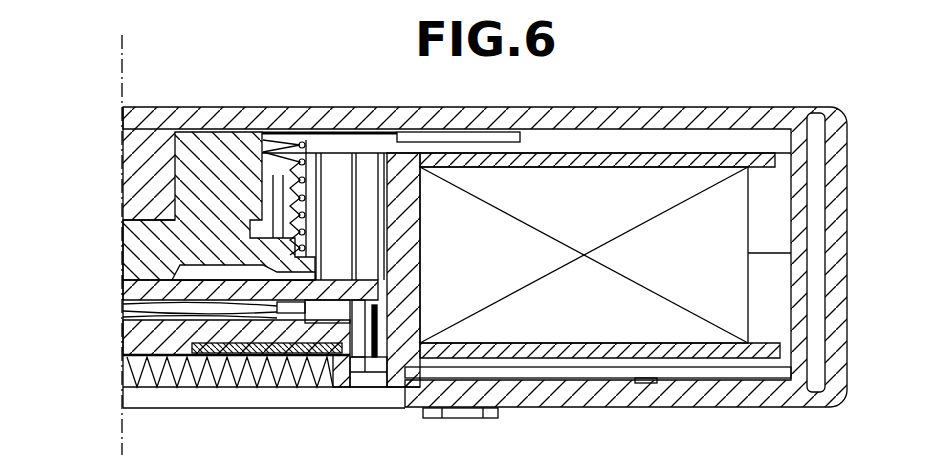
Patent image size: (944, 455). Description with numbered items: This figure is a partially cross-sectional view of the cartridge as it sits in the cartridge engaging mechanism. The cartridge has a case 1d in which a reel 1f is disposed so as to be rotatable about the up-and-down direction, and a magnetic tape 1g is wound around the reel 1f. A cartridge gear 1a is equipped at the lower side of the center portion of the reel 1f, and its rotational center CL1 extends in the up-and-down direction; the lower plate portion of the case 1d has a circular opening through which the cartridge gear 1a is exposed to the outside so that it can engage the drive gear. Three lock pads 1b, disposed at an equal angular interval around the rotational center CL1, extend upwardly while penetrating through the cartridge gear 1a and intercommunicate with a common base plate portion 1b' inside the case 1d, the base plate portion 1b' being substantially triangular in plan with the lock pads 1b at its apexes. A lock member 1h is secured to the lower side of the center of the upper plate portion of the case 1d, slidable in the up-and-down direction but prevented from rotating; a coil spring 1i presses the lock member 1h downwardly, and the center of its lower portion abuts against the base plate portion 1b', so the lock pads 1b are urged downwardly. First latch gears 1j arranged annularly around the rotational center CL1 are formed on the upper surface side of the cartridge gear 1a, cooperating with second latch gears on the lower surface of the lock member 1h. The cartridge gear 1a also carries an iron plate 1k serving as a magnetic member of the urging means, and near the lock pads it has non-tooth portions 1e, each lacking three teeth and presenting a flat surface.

The rotational center CL1 is at (122, 76).
The cartridge gear 1a is at (176, 388).
The lock pads 1b is at (351, 300).
The base plate portion 1b' is at (226, 270).
The case 1d is at (670, 118).
The non-tooth portions 1e is at (373, 380).
The reel 1f is at (582, 153).
The magnetic tape 1g is at (726, 207).
The lock member 1h is at (224, 158).
The coil spring 1i is at (303, 140).
The first latch gears 1j is at (175, 316).
The iron plate 1k is at (257, 388).